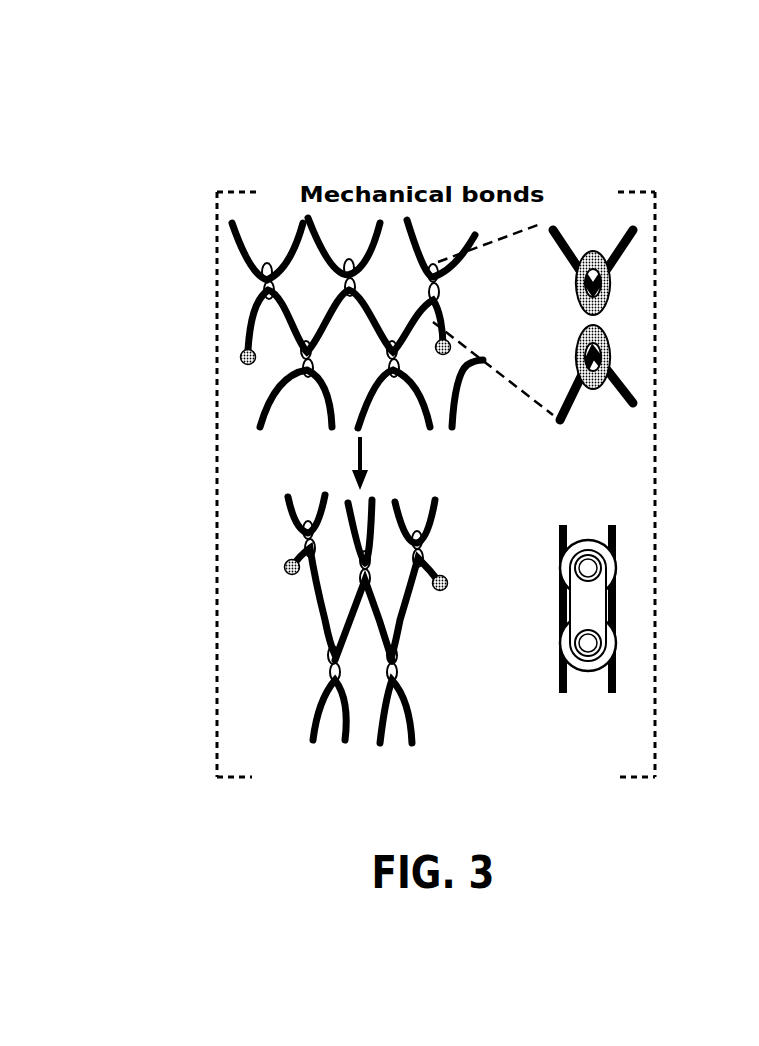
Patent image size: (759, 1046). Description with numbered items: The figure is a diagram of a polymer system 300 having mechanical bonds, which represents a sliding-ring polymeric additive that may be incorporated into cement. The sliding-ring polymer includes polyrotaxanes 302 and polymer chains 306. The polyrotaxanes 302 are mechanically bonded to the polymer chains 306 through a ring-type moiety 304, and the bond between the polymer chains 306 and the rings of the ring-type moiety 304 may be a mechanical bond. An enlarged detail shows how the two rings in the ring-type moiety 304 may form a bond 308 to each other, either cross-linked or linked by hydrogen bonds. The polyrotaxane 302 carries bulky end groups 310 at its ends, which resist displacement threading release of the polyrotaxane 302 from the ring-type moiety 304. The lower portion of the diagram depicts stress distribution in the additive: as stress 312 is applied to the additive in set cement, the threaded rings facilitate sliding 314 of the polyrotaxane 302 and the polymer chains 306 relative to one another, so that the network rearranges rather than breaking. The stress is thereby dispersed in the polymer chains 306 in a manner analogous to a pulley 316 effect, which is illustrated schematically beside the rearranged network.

The polymer system 300 is at (580, 158).
The polyrotaxane 302 is at (247, 327).
The ring-type moiety 304 is at (240, 276).
The polymer chains 306 is at (237, 230).
The bond 308 is at (602, 322).
The bulky end groups 310 is at (237, 360).
The stress 312 is at (364, 455).
The sliding 314 is at (305, 668).
The pulley 316 is at (620, 568).